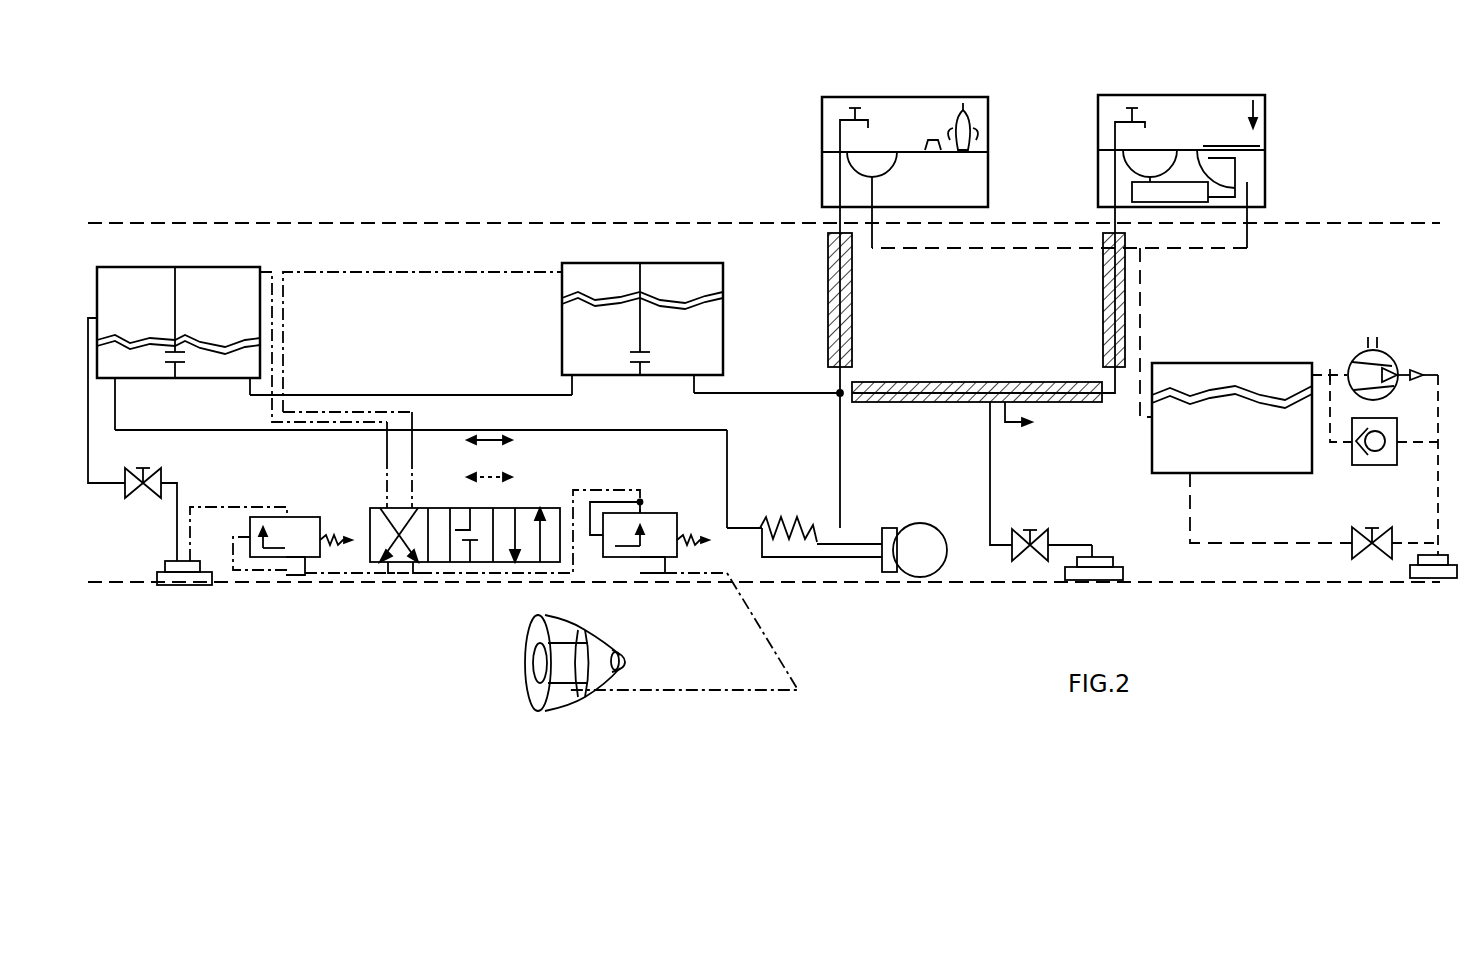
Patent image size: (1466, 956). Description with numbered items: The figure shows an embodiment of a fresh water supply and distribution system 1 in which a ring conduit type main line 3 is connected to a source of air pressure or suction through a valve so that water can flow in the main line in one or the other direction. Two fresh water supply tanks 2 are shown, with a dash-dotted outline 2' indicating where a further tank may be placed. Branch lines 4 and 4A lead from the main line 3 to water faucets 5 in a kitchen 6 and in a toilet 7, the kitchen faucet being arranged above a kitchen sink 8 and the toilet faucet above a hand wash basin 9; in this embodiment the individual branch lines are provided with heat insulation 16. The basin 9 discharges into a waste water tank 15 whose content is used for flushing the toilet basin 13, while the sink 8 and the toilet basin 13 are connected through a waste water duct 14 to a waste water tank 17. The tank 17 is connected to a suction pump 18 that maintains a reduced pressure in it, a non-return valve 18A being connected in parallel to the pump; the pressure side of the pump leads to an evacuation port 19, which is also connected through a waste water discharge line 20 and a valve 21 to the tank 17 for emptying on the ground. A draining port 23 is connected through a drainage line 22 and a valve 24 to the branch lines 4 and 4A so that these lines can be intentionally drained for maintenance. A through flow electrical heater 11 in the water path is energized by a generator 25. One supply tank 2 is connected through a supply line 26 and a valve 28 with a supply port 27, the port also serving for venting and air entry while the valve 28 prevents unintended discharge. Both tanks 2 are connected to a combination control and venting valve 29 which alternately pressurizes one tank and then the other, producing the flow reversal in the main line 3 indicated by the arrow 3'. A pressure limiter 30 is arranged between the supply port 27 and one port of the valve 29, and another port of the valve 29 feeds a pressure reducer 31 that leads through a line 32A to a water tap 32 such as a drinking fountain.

The fresh water supply and distribution system 1 is at (622, 133).
The fresh water supply tanks 2 is at (410, 330).
The optional additional tank 2' is at (411, 326).
The main line 3 is at (479, 435).
The arrow 3' is at (508, 458).
The branch lines 4 is at (822, 170).
The branch line 4A is at (917, 402).
The water faucets 5 is at (868, 122).
The kitchen 6 is at (950, 97).
The toilet 7 is at (1215, 95).
The kitchen sink 8 is at (878, 157).
The hand wash basin 9 is at (1158, 158).
The heater 11 is at (782, 520).
The toilet basin 13 is at (1255, 168).
The waste water duct 14 is at (1247, 232).
The waste water tank 15 is at (1180, 202).
The heat insulation 16 is at (1103, 290).
The waste water tank 17 is at (1222, 363).
The suction pump 18 is at (1387, 352).
The non-return valve 18A is at (1375, 465).
The evacuation port 19 is at (1437, 580).
The waste water discharge line 20 is at (1255, 545).
The valve 21 is at (1358, 548).
The drainage line 22 is at (990, 462).
The draining port 23 is at (1095, 580).
The valve 24 is at (1045, 535).
The generator 25 is at (908, 580).
The supply line 26 is at (90, 463).
The supply port 27 is at (190, 583).
The valve 28 is at (162, 474).
The combination valve 29 is at (440, 562).
The pressure limiter 30 is at (305, 575).
The pressure reducer 31 is at (667, 573).
The water tap 32 is at (525, 685).
The line 32A is at (727, 692).